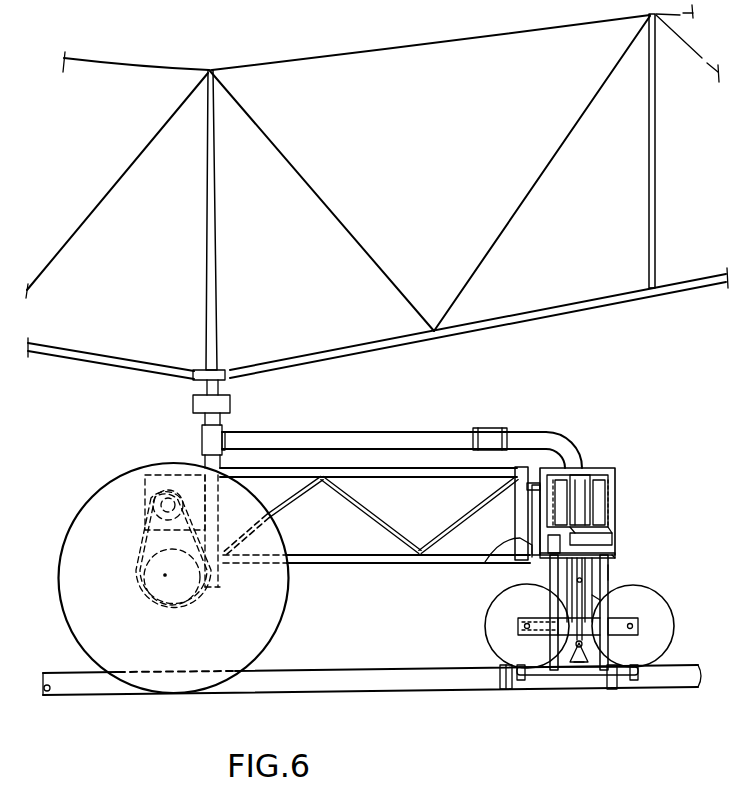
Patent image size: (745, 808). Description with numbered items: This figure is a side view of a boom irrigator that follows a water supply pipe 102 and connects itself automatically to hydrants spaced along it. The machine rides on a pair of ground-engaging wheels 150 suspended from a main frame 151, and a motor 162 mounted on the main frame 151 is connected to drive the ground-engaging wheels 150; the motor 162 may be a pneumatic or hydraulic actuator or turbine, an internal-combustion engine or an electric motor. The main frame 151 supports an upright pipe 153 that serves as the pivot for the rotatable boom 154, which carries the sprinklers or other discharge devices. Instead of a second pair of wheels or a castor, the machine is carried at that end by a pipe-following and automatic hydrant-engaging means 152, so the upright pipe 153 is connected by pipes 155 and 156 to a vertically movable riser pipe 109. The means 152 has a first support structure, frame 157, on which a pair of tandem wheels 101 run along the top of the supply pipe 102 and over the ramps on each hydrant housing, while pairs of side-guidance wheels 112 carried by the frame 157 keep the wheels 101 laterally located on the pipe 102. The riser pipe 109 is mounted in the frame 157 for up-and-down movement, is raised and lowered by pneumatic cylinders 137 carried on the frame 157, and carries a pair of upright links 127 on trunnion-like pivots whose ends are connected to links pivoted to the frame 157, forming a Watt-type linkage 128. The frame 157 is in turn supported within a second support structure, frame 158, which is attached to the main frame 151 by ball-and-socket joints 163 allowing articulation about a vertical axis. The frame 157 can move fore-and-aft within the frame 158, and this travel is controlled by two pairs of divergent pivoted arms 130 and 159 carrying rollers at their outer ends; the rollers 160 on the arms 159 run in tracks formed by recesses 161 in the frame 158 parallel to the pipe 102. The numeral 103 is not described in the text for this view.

The wheels 101 is at (653, 644).
The water supply pipe 102 is at (393, 680).
The base plate 103 is at (555, 690).
The riser pipe 109 is at (590, 593).
The side-guidance wheels 112 is at (515, 688).
The upright links 127 is at (617, 597).
The Watt-type linkage 128 is at (632, 560).
The pivoted arms 130 is at (578, 683).
The pneumatic cylinders 137 is at (586, 527).
The ground-engaging wheels 150 is at (105, 528).
The main frame 151 is at (331, 560).
The pipe-following and automatic hydrant-engaging means 152 is at (610, 573).
The upright pipe 153 is at (213, 384).
The rotatable boom 154 is at (534, 313).
The pipe 155 is at (407, 440).
The pipe 156 is at (568, 444).
The frame 157 is at (608, 608).
The frame 158 is at (615, 467).
The pivoted arms 159 is at (540, 563).
The rollers 160 is at (517, 490).
The recesses 161 is at (631, 526).
The motor 162 is at (143, 505).
The ball-and-socket joints 163 is at (535, 480).